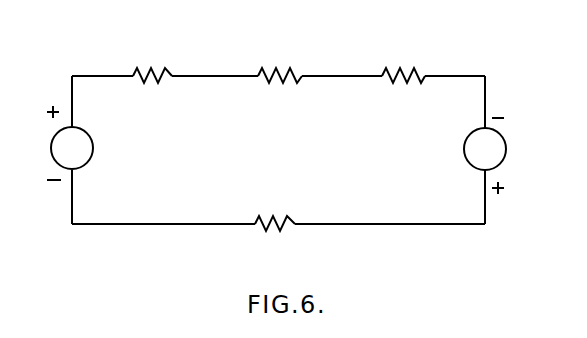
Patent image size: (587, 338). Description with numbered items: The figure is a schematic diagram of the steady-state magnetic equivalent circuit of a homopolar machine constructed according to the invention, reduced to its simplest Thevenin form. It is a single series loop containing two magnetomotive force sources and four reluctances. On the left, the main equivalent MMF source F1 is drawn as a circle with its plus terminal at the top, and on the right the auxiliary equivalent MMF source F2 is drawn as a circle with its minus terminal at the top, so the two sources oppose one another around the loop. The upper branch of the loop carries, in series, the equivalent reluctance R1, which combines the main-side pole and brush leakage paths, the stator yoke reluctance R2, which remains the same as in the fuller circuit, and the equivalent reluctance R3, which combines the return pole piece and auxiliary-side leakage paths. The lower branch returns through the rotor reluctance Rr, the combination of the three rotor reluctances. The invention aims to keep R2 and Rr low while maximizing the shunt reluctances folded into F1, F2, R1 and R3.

The equivalent reluctance R1'' R1 is at (154, 63).
The stator yoke reluctance R2 is at (281, 67).
The equivalent reluctance R3'' R3 is at (397, 68).
The rotor reluctance Rr is at (283, 229).
The main equivalent MMF source F1'' F1 is at (72, 148).
The auxiliary equivalent MMF source F2'' F2 is at (485, 149).